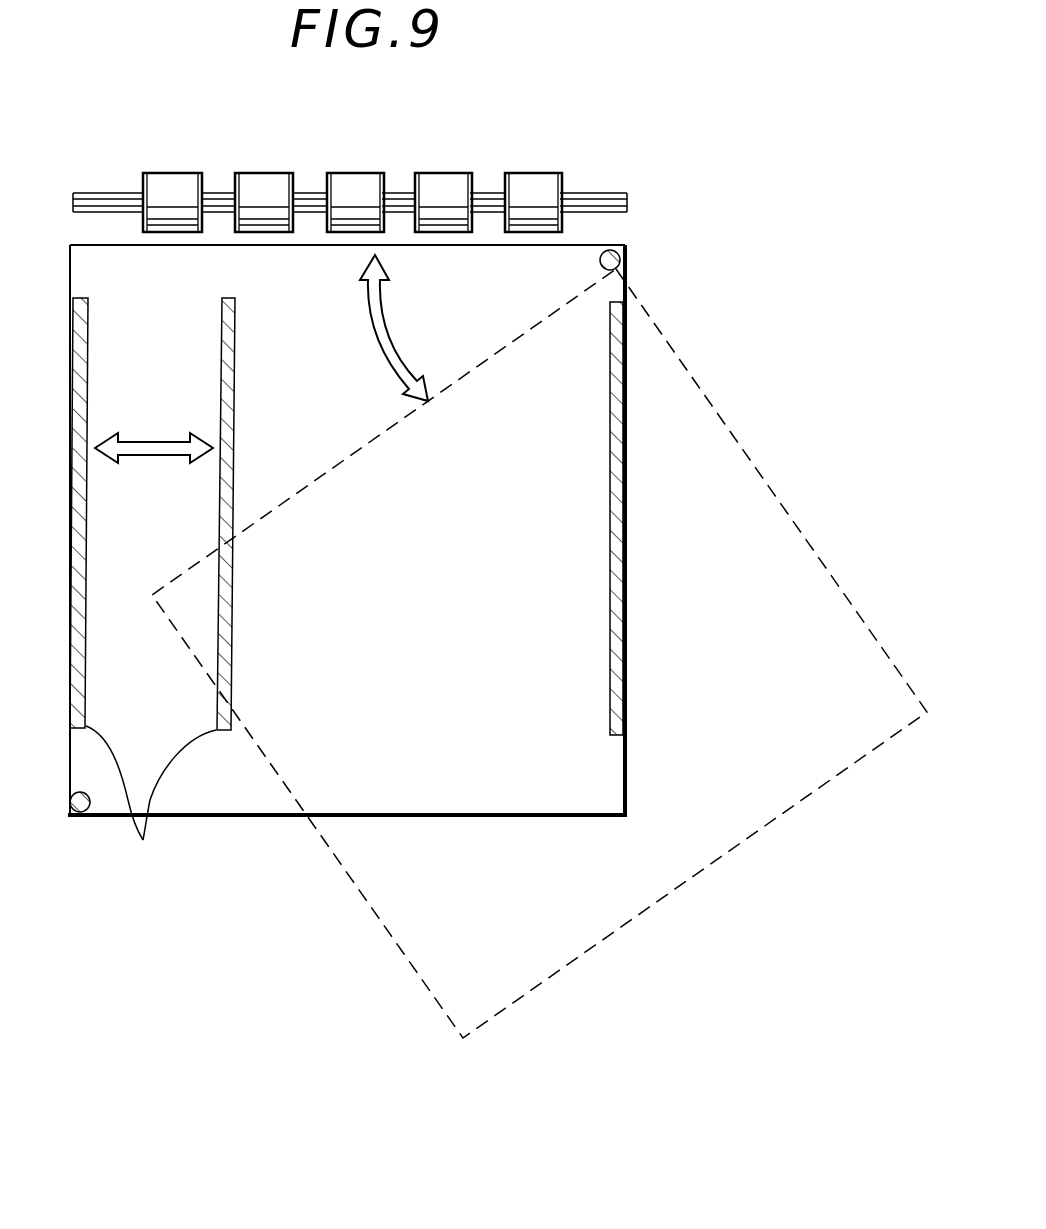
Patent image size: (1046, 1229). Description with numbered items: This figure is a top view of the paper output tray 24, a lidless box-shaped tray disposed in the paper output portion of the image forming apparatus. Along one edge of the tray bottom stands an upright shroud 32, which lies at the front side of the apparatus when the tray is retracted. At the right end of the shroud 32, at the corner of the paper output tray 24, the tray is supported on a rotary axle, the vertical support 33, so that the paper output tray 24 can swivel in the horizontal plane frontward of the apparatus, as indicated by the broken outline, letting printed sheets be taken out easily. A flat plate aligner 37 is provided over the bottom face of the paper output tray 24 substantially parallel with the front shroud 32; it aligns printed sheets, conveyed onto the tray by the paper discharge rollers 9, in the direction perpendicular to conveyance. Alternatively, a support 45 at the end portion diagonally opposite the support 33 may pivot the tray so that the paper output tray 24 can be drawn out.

The paper discharge rollers 9 is at (533, 188).
The paper output tray 24 is at (283, 800).
The shroud 32 is at (627, 326).
The vertical support 33 is at (627, 252).
The aligner 37 is at (143, 840).
The support 45 is at (68, 816).